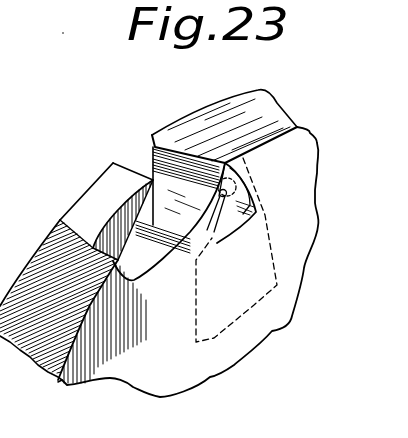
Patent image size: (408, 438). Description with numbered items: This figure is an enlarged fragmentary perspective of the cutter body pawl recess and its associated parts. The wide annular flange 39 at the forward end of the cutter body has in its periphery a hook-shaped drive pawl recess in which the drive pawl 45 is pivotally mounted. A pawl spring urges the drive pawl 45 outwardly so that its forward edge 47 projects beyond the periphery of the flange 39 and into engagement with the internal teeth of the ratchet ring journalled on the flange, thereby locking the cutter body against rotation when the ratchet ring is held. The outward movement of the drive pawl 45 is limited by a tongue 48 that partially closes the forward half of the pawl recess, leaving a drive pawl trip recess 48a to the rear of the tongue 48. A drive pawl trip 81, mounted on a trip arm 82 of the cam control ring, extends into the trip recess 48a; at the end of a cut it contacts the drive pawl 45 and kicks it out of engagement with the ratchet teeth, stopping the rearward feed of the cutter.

The annular flange 39 is at (79, 383).
The drive pawl 45 is at (187, 252).
The forward edge 47 is at (150, 152).
The tongue 48 is at (110, 182).
The drive pawl trip recess 48a is at (60, 220).
The drive pawl trip 81 is at (235, 222).
The trip arm 82 is at (265, 263).